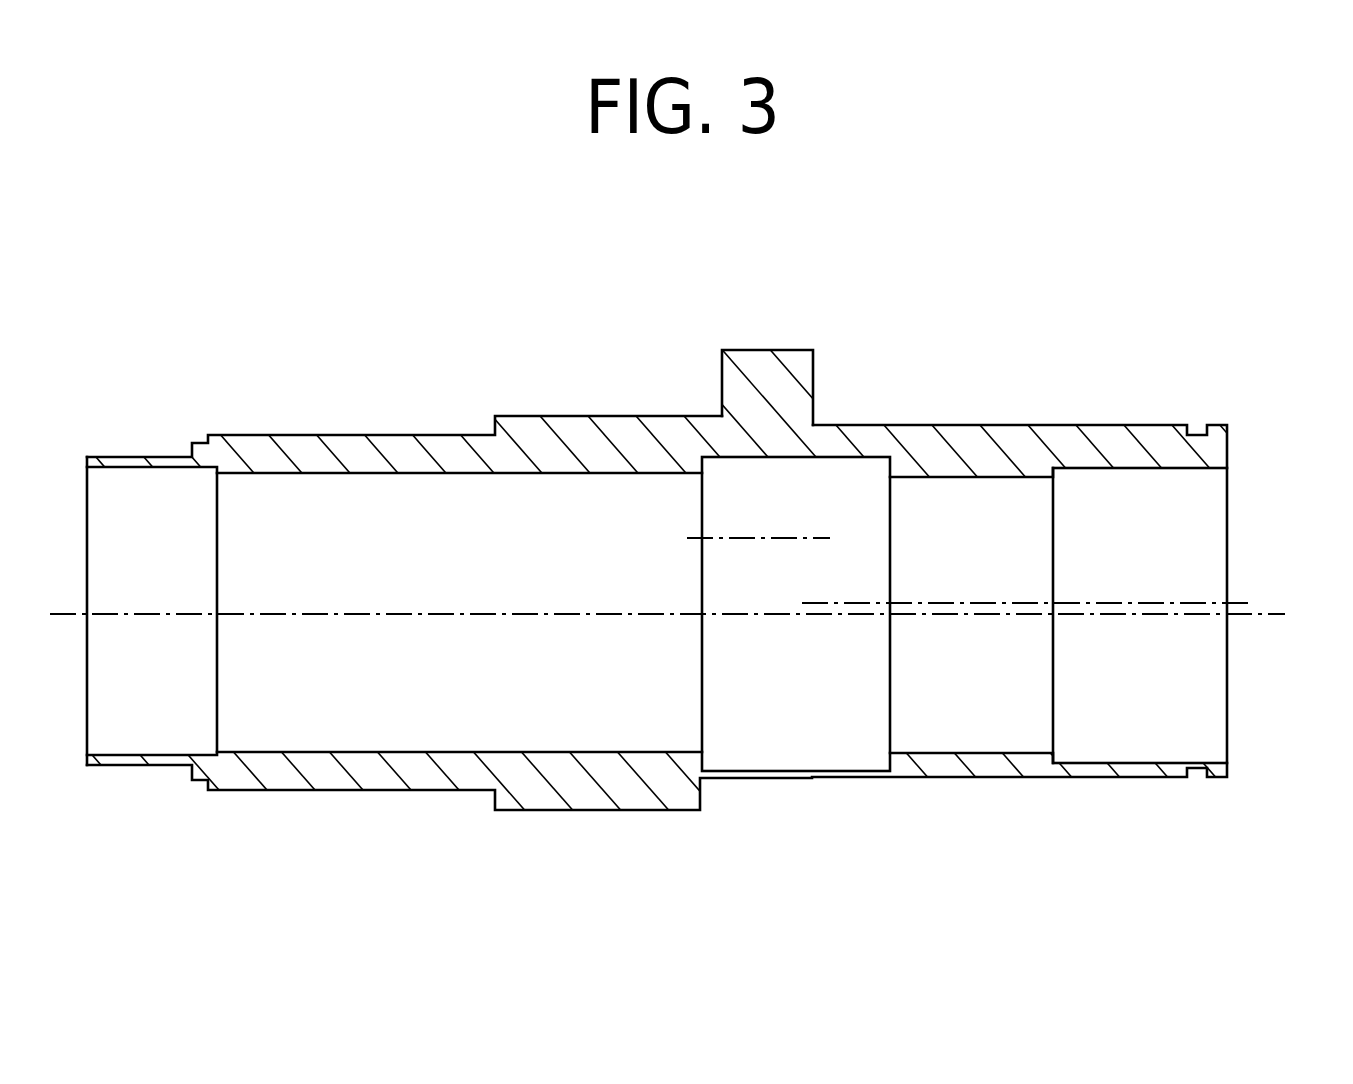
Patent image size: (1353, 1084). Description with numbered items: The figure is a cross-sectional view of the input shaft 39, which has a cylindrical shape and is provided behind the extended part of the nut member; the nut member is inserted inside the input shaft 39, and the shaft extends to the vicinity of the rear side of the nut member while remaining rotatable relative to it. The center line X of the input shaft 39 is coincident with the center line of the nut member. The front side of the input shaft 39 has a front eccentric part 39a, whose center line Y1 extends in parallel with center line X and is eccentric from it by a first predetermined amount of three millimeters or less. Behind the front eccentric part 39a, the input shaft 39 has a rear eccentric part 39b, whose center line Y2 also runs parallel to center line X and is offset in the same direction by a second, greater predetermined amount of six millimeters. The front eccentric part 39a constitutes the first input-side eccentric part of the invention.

The input shaft 39 is at (338, 433).
The front eccentric part 39a is at (1015, 445).
The rear eccentric part 39b is at (763, 370).
The center line X is at (1253, 614).
The center line Y1 is at (1253, 603).
The center line Y2 is at (830, 538).